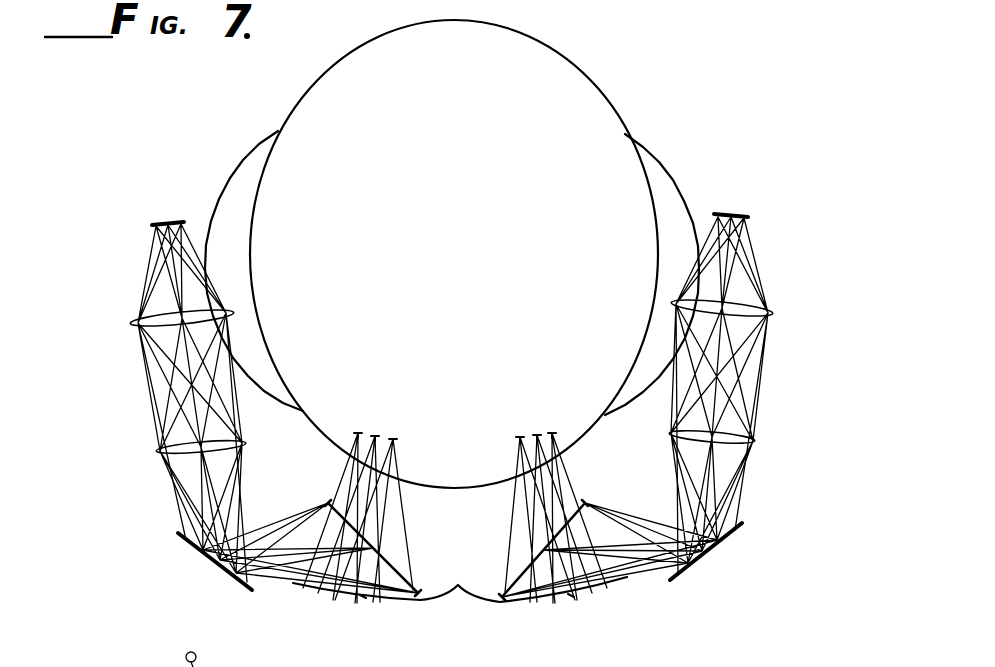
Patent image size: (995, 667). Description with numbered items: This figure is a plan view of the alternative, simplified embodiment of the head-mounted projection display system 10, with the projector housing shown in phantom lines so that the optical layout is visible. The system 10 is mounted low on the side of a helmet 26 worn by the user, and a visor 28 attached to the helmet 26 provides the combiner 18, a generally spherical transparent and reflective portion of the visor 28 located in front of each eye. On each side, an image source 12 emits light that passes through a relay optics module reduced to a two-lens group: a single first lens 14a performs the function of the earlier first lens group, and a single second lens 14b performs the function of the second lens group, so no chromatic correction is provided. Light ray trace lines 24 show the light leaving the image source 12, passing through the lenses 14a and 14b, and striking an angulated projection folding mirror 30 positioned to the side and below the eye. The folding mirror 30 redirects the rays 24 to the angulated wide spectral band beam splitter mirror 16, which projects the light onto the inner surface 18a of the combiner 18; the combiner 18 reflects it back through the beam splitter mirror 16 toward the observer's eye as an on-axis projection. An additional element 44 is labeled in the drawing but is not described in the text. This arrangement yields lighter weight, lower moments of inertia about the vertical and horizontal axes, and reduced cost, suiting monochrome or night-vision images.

The projection display system 10 is at (152, 512).
The image source 12 is at (164, 222).
The first lens 14a is at (146, 330).
The second lens 14b is at (165, 460).
The beam splitter mirror 16 is at (413, 572).
The combiner 18 is at (343, 600).
The inner surface of combiner 18a is at (363, 596).
The light ray trace lines 24 is at (152, 388).
The helmet 26 is at (599, 97).
The visor 28 is at (440, 606).
The projection folding mirror 30 is at (202, 556).
The connector 44 is at (183, 658).